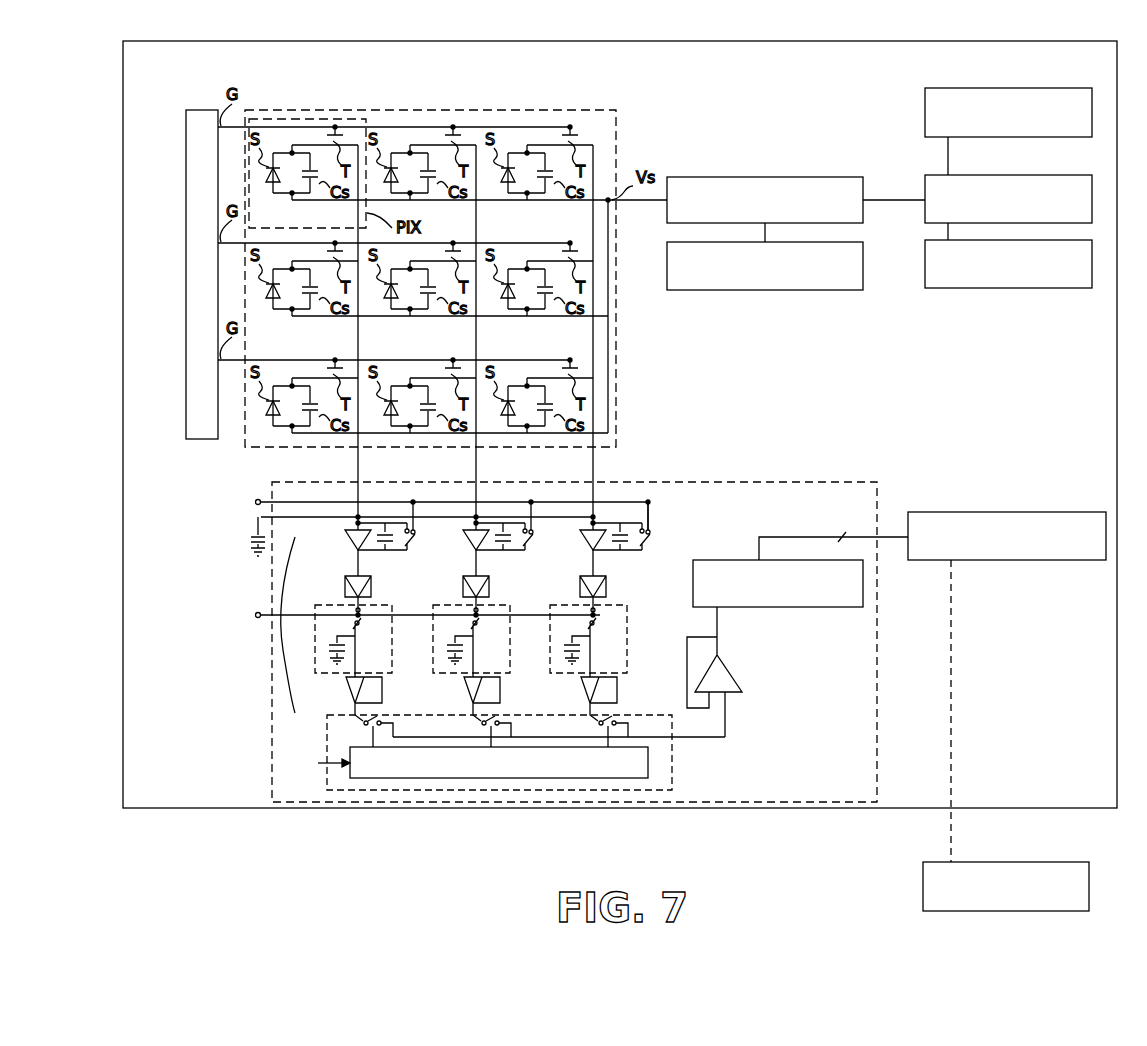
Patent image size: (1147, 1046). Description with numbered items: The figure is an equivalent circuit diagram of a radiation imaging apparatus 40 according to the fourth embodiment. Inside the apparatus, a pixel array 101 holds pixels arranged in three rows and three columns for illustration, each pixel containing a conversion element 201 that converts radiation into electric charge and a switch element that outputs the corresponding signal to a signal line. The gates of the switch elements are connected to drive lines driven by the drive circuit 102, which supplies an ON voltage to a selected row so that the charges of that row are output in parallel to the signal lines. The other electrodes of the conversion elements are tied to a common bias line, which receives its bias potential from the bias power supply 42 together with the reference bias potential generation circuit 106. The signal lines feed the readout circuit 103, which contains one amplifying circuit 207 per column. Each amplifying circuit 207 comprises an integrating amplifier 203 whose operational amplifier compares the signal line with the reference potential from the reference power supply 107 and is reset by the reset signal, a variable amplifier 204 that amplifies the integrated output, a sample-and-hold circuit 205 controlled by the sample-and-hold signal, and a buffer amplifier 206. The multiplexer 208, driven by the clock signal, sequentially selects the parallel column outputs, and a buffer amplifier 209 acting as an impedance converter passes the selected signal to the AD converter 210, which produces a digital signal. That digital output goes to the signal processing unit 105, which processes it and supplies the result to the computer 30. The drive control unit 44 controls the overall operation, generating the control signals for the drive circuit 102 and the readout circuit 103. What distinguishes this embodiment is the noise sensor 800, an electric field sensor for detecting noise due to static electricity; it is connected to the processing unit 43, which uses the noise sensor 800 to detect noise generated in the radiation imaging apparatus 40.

The radiation imaging apparatus 40 is at (620, 41).
The pixel array 101 is at (456, 256).
The drive circuit 102 is at (197, 110).
The readout circuit 103 is at (270, 706).
The signal processing unit 105 is at (950, 512).
The reference bias potential generation circuit 106 is at (695, 290).
The reference power supply 107 is at (252, 546).
The conversion element 201 is at (279, 204).
The integrating amplifier 203 is at (344, 546).
The variable amplifier 204 is at (345, 588).
The sample-and-hold circuit 205 is at (344, 675).
The buffer amplifier 206 is at (347, 696).
The amplifying circuit 207 is at (268, 626).
The multiplexer 208 is at (673, 770).
The buffer amplifier 209 is at (728, 673).
The AD converter 210 is at (693, 585).
The bias power supply 42 is at (705, 177).
The processing unit 43 is at (960, 175).
The drive control unit 44 is at (955, 289).
The noise sensor 800 is at (963, 88).
The computer 30 is at (960, 862).